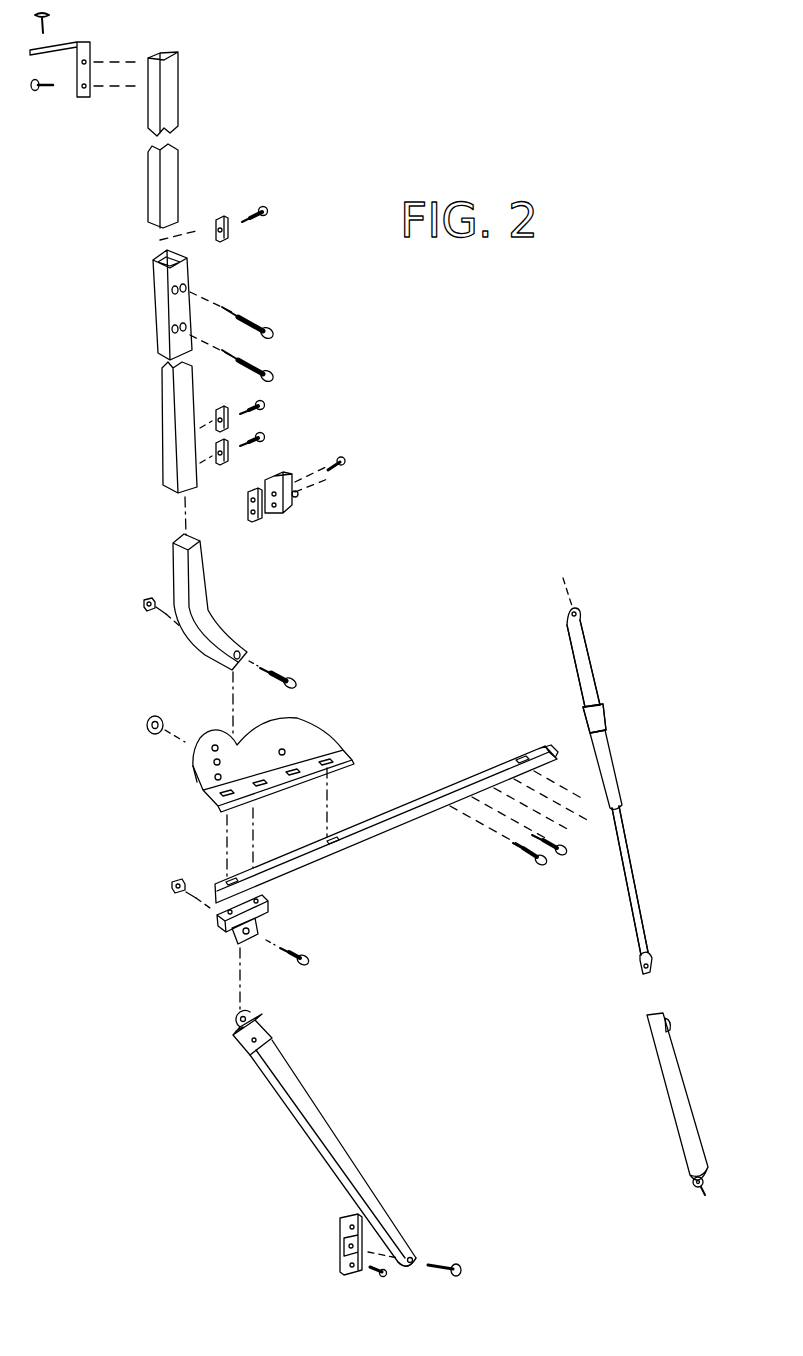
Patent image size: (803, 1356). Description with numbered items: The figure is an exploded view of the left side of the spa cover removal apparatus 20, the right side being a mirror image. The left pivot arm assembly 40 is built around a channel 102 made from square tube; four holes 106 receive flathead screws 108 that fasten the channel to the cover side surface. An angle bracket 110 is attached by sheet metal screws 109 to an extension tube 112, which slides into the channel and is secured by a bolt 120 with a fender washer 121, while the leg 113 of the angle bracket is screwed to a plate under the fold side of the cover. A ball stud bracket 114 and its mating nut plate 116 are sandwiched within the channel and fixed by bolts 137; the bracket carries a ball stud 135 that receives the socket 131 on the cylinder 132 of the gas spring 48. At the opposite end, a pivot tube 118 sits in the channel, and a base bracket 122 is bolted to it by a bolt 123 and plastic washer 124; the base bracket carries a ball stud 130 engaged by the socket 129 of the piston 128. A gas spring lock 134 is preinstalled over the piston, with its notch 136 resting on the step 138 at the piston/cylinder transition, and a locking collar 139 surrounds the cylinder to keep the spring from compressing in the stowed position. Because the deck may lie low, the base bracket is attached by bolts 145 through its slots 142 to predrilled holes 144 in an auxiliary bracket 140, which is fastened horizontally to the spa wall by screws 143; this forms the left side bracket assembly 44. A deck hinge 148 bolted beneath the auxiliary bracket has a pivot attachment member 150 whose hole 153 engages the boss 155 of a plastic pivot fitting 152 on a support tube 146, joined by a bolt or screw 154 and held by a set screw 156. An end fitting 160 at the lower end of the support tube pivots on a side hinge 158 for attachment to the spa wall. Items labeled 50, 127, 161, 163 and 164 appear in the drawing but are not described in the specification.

The spa cover removal apparatus 20 is at (148, 1020).
The left pivot arm assembly 40 is at (140, 660).
The left side bracket assembly 44 is at (140, 852).
The gas spring 48 is at (633, 762).
The mounting plate assembly 50 is at (186, 745).
The channel 102 is at (162, 440).
The holes 106 is at (218, 262).
The flathead screws 108 is at (282, 363).
The sheet metal screws 109 is at (31, 86).
The angle bracket 110 is at (76, 38).
The extension tube 112 is at (178, 90).
The leg 113 is at (59, 43).
The ball stud bracket 114 is at (322, 496).
The nut plate 116 is at (268, 533).
The pivot tube 118 is at (173, 556).
The bolt 120 is at (262, 210).
The fender washer 121 is at (226, 222).
The base bracket 122 is at (195, 774).
The bolt 123 is at (289, 680).
The plastic washer 124 is at (148, 722).
The mounting holes 127 is at (216, 775).
The piston 128 is at (657, 912).
The socket 129 is at (706, 1193).
The ball stud 130 is at (292, 745).
The socket 131 is at (555, 577).
The cylinder 132 is at (617, 688).
The gas spring lock 134 is at (690, 1084).
The ball stud 135 is at (298, 497).
The notch 136 is at (668, 1006).
The bolts 137 is at (348, 460).
The step 138 is at (653, 812).
The locking collar 139 is at (606, 718).
The auxiliary bracket 140 is at (428, 820).
The slots 142 is at (300, 788).
The screws 143 is at (560, 860).
The predrilled holes 144 is at (332, 842).
The bolts 145 is at (328, 788).
The support tube 146 is at (332, 1143).
The deck hinge 148 is at (208, 917).
The pivot attachment member 150 is at (234, 932).
The pivot fitting 152 is at (235, 1048).
The hole 153 is at (255, 931).
The bolt or screw 154 is at (310, 962).
The boss 155 is at (248, 1012).
The set screw 156 is at (270, 1032).
The side hinge 158 is at (338, 1242).
The end fitting 160 is at (416, 1256).
The hole 161 is at (410, 1268).
The screw 163 is at (375, 1278).
The bolt 164 is at (462, 1266).